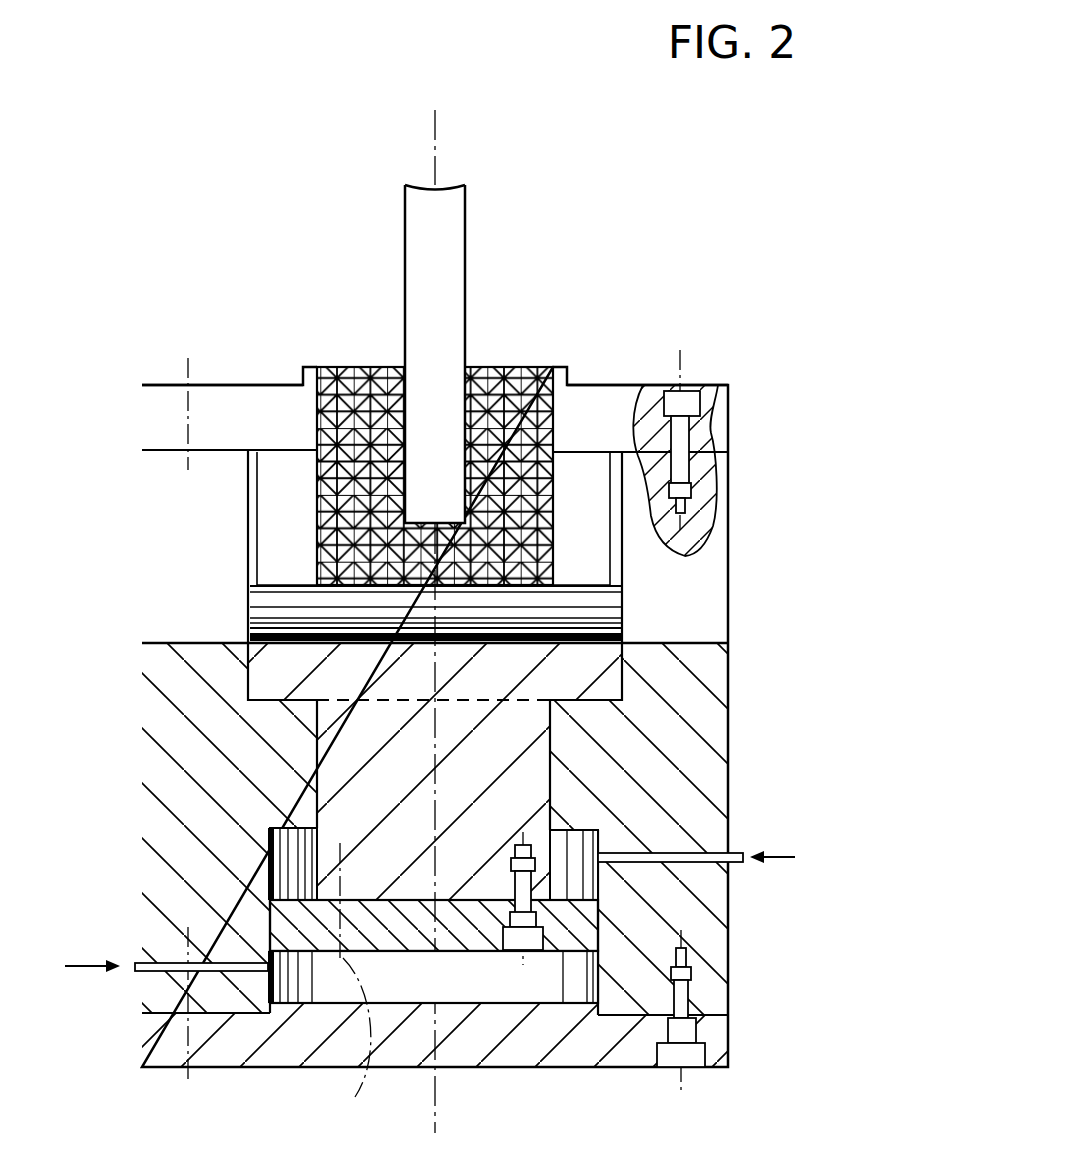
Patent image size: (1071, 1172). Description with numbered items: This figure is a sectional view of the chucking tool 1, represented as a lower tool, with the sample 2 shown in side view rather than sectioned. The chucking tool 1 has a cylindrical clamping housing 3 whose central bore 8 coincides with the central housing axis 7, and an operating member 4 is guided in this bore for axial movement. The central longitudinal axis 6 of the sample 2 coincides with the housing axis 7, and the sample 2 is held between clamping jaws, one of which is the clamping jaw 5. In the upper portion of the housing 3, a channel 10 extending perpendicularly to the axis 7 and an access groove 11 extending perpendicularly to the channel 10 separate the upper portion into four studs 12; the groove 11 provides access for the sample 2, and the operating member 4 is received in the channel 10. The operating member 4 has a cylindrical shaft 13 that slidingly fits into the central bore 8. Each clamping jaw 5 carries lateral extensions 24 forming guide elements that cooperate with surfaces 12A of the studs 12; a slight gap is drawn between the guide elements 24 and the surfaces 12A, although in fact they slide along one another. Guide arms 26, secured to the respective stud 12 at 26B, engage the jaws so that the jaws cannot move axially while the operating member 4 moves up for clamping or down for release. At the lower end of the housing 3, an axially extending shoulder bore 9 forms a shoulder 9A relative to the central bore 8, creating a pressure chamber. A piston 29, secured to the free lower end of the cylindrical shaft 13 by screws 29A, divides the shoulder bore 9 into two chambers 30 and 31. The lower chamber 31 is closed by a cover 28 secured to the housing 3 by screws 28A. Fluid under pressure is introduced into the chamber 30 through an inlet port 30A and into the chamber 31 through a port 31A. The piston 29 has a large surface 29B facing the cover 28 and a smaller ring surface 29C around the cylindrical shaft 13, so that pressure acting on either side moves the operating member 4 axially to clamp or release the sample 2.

The chucking tool 1 is at (172, 184).
The sample 2 is at (413, 292).
The clamping housing 3 is at (202, 793).
The operating member 4 is at (263, 690).
The clamping jaw 5 is at (510, 368).
The central longitudinal axis of the sample 6 is at (437, 312).
The central housing axis 7 is at (450, 737).
The central bore 8 is at (562, 747).
The shoulder bore 9 is at (612, 931).
The shoulder 9A is at (573, 827).
The channel 10 is at (268, 703).
The access groove 11 is at (160, 638).
The stud 12 is at (156, 496).
The stud surface 12A is at (245, 482).
The cylindrical shaft 13 is at (349, 827).
The lateral extension 24 is at (272, 535).
The guide arm 26 is at (160, 420).
The guide arm fastening 26B is at (200, 385).
The cover 28 is at (525, 1068).
The cover screw 28A is at (688, 1055).
The piston 29 is at (285, 932).
The piston screw 29A is at (398, 1070).
The large piston surface 29B is at (310, 947).
The ring surface 29C is at (300, 893).
The upper chamber 30 is at (573, 860).
The inlet port 30A is at (742, 848).
The lower chamber 31 is at (552, 990).
The port 31A is at (137, 973).